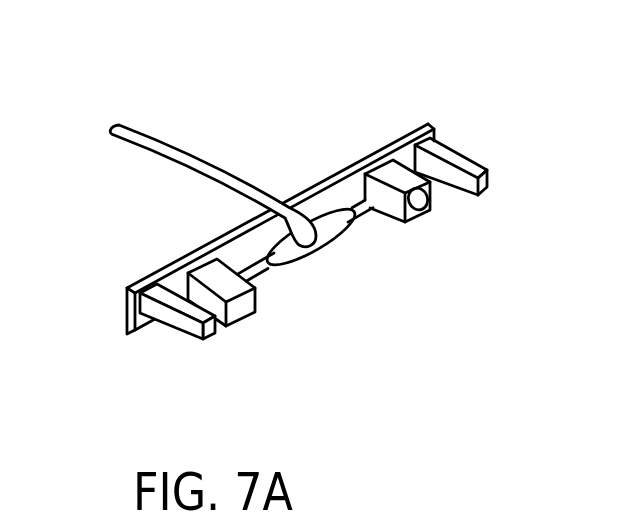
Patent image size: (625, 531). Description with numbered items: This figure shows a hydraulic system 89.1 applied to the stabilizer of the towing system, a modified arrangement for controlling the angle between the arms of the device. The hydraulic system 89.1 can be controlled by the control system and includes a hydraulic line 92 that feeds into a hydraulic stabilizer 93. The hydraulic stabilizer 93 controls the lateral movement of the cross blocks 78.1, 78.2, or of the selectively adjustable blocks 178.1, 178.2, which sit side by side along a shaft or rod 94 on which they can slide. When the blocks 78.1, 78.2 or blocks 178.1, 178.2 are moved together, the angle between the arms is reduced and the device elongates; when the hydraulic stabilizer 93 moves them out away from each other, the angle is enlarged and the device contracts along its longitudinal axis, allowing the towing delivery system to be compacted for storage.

The hydraulic system 89.1 is at (285, 193).
The hydraulic line 92 is at (157, 160).
The hydraulic stabilizer 93 is at (338, 220).
The rod 94 is at (380, 212).
The cross block 78.1 is at (257, 322).
The selectively adjustable block 178.1 is at (245, 306).
The cross block 78.2 is at (456, 211).
The selectively adjustable block 178.2 is at (426, 211).